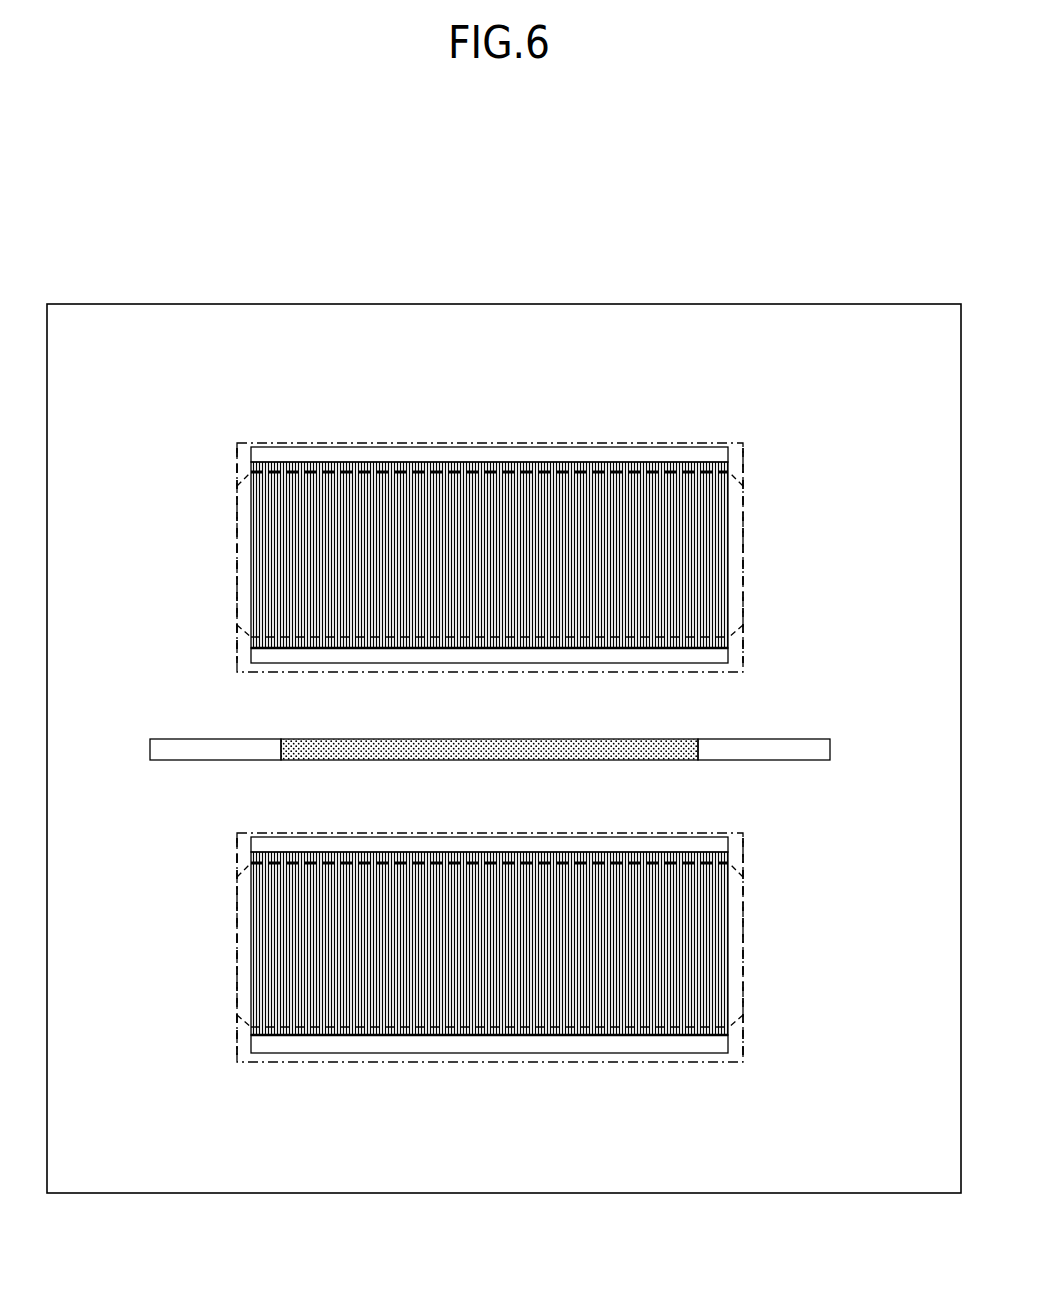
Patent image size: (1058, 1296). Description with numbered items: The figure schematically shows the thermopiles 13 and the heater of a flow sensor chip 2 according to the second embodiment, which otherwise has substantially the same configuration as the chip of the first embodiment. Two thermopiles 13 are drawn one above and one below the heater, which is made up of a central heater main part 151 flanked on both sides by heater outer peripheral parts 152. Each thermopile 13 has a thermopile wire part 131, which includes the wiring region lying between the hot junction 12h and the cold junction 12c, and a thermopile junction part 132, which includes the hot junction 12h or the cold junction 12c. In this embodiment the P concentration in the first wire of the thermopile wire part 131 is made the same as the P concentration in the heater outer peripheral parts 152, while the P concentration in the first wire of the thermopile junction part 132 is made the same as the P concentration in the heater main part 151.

The flow sensor chip 2 is at (754, 200).
The thermopile 13 is at (708, 415).
The cold junction 12c is at (274, 452).
The hot junction 12h is at (730, 656).
The thermopile wire part 131 is at (745, 548).
The thermopile junction part 132 is at (236, 445).
The heater main part 151 is at (490, 738).
The heater outer peripheral parts 152 is at (220, 760).